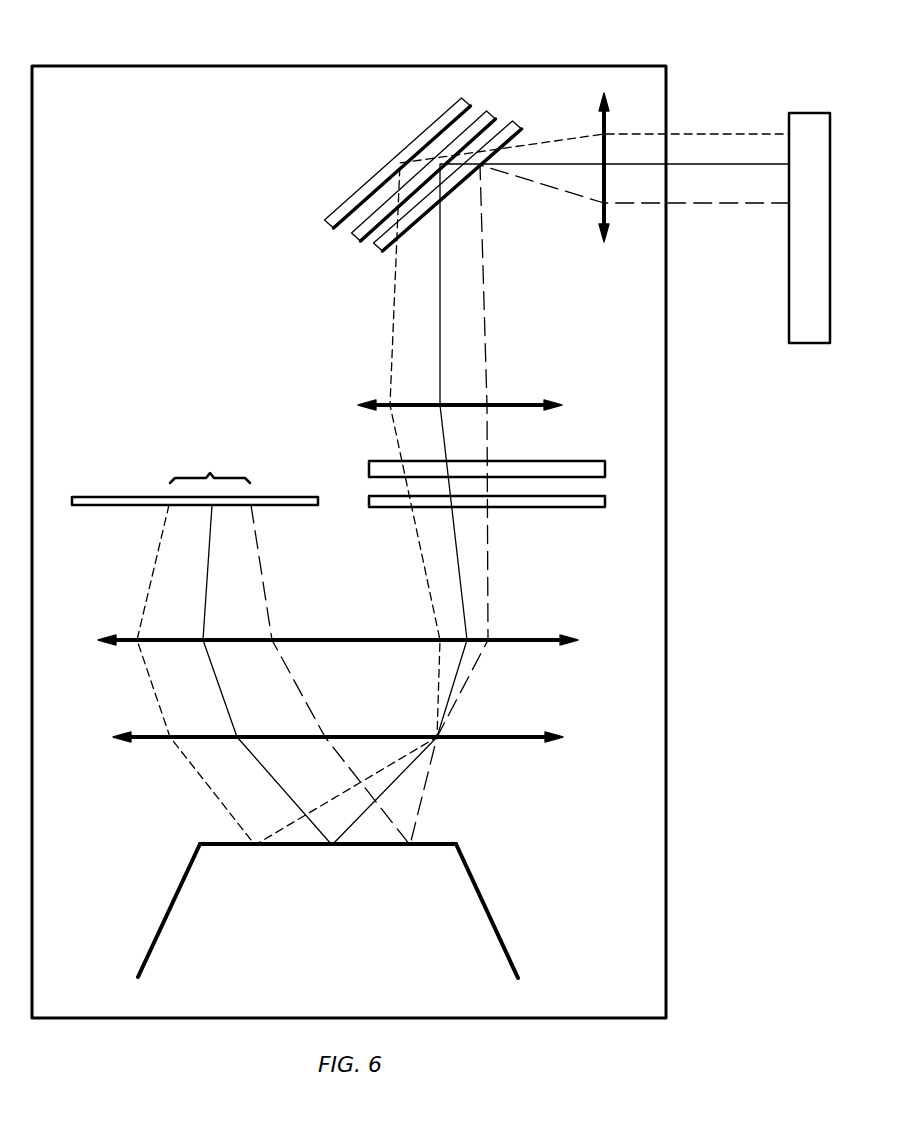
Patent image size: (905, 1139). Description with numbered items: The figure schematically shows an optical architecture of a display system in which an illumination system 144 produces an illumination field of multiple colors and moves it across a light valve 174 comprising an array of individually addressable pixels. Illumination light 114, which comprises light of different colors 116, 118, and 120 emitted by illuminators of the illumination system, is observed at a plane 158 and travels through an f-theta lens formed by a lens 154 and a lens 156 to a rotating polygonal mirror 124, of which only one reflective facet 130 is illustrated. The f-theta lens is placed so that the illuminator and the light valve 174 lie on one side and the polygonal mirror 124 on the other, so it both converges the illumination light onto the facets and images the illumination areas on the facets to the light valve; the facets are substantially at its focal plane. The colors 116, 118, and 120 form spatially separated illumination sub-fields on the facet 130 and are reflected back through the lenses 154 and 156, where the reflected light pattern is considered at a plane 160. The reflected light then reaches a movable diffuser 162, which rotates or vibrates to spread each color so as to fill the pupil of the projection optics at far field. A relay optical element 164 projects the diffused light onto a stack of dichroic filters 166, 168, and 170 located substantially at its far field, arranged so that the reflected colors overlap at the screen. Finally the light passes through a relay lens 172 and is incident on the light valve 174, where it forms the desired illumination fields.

The illumination system 144 is at (234, 64).
The light valve 174 is at (811, 112).
The relay lens 172 is at (601, 220).
The dichroic filter 170 is at (502, 127).
The dichroic filter 168 is at (357, 224).
The dichroic filter 166 is at (374, 178).
The relay optical element 164 is at (522, 402).
The movable diffuser 162 is at (575, 460).
The plane 160 is at (563, 508).
The plane 158 is at (102, 495).
The illumination light 114 is at (210, 464).
The light of a first color 116 is at (152, 561).
The light of a second color 118 is at (205, 575).
The light of a third color 120 is at (265, 580).
The lens 154 is at (524, 637).
The lens 156 is at (508, 740).
The polygonal mirror 124 is at (142, 901).
The reflective facet 130 is at (440, 842).